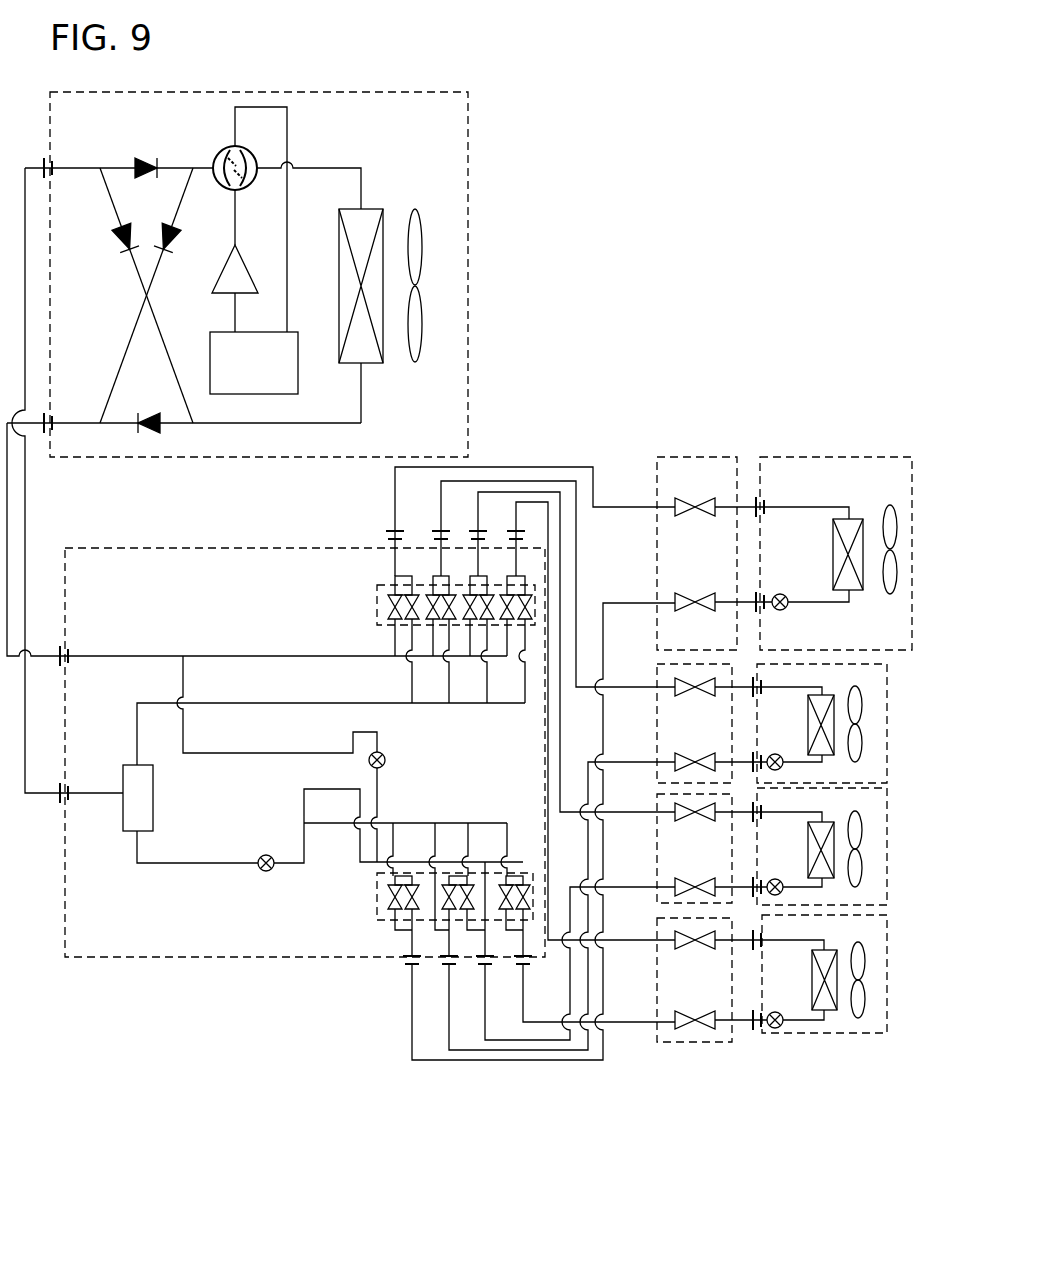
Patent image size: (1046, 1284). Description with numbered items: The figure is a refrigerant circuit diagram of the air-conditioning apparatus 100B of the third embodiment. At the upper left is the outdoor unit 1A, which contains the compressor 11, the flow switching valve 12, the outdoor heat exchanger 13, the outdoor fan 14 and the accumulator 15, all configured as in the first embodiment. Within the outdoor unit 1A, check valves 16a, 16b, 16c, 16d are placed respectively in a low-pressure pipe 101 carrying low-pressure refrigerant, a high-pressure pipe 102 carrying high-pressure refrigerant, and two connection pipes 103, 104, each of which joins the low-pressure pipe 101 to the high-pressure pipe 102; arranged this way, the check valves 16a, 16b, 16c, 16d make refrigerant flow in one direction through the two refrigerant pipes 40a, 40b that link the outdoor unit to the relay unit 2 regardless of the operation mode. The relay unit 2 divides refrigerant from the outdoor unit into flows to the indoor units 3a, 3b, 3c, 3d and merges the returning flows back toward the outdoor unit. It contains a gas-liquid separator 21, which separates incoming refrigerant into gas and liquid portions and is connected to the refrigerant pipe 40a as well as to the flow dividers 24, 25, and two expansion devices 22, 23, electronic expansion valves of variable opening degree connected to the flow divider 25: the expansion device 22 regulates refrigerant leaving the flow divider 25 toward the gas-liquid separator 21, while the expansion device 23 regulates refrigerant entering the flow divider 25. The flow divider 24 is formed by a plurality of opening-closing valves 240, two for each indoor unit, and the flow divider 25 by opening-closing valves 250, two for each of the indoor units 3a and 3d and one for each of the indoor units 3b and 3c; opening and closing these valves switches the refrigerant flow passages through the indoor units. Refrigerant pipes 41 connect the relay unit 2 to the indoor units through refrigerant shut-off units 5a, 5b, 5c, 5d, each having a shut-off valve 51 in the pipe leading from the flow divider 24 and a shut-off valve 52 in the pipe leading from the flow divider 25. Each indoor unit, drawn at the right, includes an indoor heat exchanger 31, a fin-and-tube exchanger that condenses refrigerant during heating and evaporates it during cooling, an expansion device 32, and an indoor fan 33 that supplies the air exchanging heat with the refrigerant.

The air-conditioning apparatus 100B is at (505, 1147).
The outdoor unit 1A is at (468, 143).
The relay unit 2 is at (192, 548).
The indoor unit 3a is at (813, 537).
The indoor unit 3b is at (887, 698).
The indoor unit 3c is at (887, 823).
The indoor unit 3d is at (887, 950).
The refrigerant shut-off unit 5a is at (679, 552).
The refrigerant shut-off unit 5b is at (665, 727).
The refrigerant shut-off unit 5c is at (665, 852).
The refrigerant shut-off unit 5d is at (665, 987).
The compressor 11 is at (215, 275).
The flow switching valve 12 is at (248, 152).
The outdoor heat exchanger 13 is at (339, 209).
The outdoor fan 14 is at (418, 208).
The accumulator 15 is at (298, 372).
The check valve 16a is at (135, 157).
The check valve 16b is at (145, 408).
The check valve 16c is at (113, 230).
The check valve 16d is at (178, 228).
The low-pressure pipe 101 is at (187, 165).
The high-pressure pipe 102 is at (203, 425).
The connection pipe 103 is at (140, 283).
The connection pipe 104 is at (160, 320).
The gas-liquid separator 21 is at (120, 833).
The expansion device 22 is at (260, 870).
The expansion device 23 is at (386, 760).
The flow divider 24 is at (428, 630).
The opening-closing valve 240 is at (384, 602).
The flow divider 25 is at (428, 893).
The opening-closing valve 250 is at (377, 888).
The indoor heat exchanger 31 is at (852, 519).
The expansion device 32 is at (782, 594).
The indoor fan 33 is at (886, 602).
The refrigerant pipe 40a is at (27, 497).
The refrigerant pipe 40b is at (85, 656).
The refrigerant pipe 41 is at (502, 467).
The shut-off valve 51 is at (712, 488).
The shut-off valve 52 is at (699, 594).